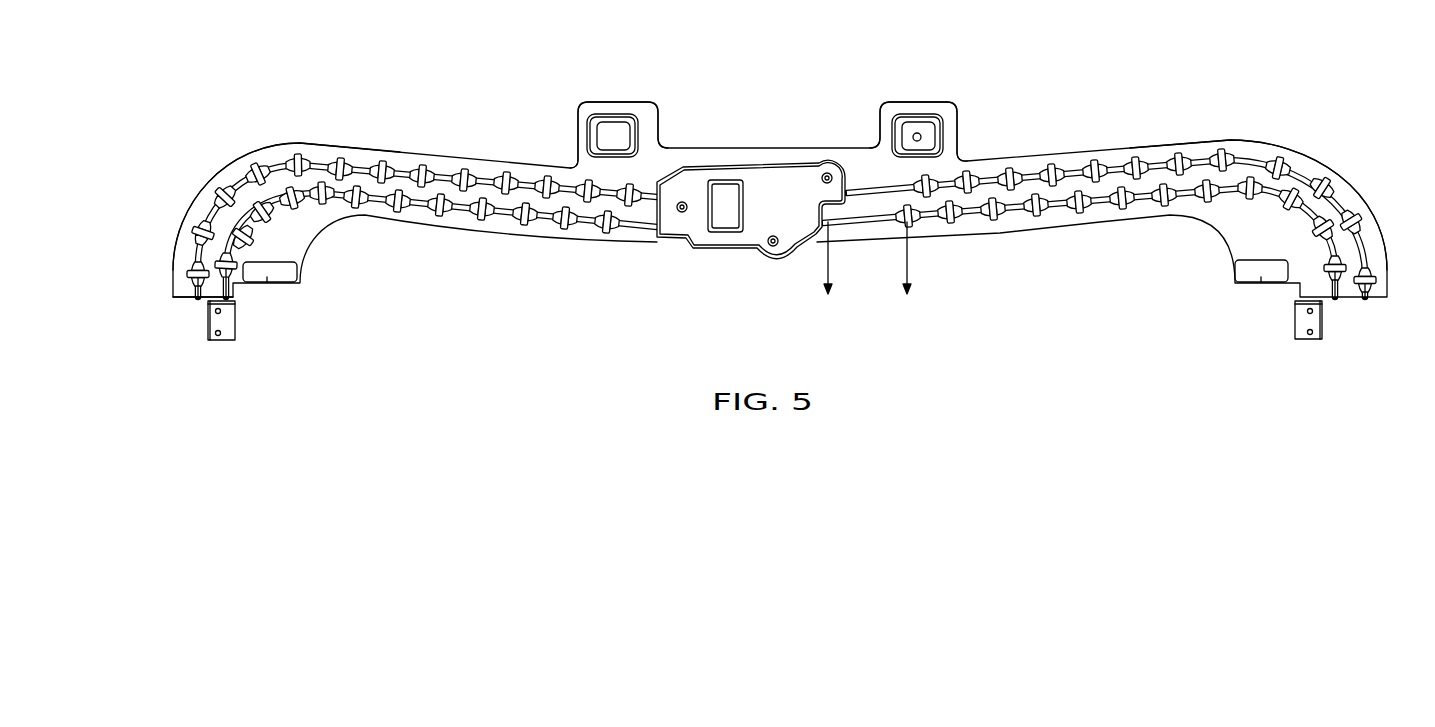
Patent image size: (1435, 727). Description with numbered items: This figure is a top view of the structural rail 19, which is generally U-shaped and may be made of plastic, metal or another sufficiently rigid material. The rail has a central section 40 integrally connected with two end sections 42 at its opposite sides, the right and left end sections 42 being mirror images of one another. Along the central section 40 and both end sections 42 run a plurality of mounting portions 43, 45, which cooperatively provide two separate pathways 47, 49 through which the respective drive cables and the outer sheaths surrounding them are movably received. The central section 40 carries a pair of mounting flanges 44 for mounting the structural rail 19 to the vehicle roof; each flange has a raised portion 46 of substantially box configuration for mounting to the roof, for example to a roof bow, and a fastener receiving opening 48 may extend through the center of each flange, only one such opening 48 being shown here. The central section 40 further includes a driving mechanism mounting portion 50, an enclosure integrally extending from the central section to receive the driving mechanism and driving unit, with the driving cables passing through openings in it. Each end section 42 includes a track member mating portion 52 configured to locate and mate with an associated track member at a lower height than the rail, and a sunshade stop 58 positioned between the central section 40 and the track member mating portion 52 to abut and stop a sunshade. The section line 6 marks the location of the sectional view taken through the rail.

The structural rail 19 is at (333, 371).
The central section 40 is at (758, 150).
The end sections 42 is at (294, 143).
The mounting portions 43 is at (194, 258).
The mounting flanges 44 is at (625, 101).
The mounting portions 45 is at (190, 289).
The raised portion 46 is at (593, 113).
The pathway 47 is at (190, 304).
The fastener receiving opening 48 is at (921, 136).
The pathway 49 is at (238, 303).
The driving mechanism mounting portion 50 is at (753, 240).
The track member mating portion 52 is at (224, 341).
The sunshade stop 58 is at (283, 272).
The section line 6- 6 is at (867, 275).